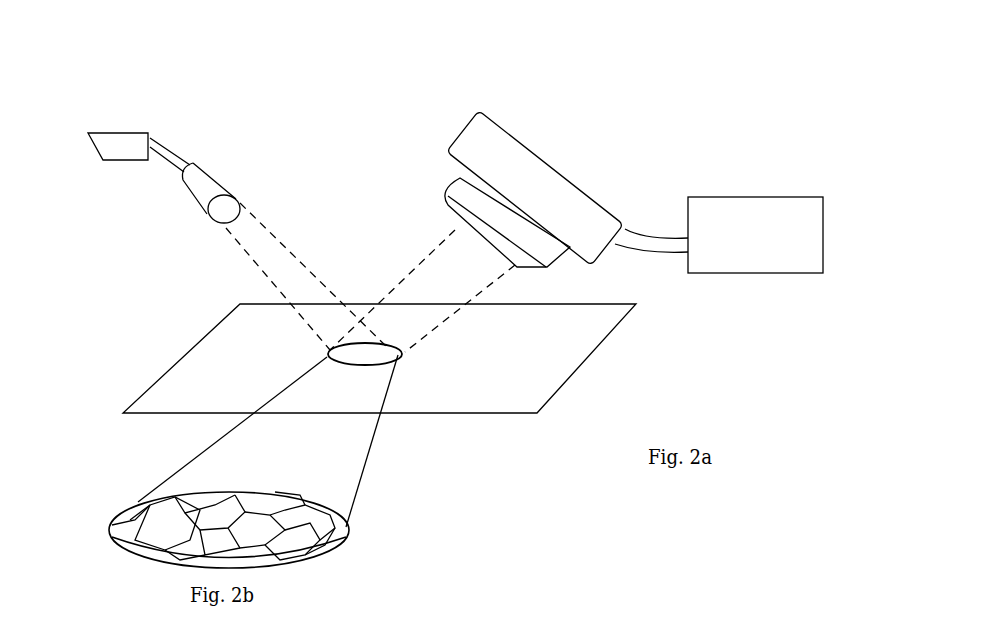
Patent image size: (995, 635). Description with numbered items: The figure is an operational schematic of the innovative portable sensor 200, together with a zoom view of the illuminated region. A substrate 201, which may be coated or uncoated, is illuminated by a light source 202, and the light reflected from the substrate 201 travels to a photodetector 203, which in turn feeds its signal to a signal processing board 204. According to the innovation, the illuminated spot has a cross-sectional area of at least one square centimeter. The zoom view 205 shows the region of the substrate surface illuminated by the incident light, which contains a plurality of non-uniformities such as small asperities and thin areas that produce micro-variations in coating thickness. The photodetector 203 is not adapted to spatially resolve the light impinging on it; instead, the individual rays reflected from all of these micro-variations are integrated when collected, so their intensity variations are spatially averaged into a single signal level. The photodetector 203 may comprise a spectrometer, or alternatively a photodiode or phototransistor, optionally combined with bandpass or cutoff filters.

In FIG. 2A, the imaging system 200 is at (634, 81).
In FIG. 2A, the substrate 201 is at (563, 363).
In FIG. 2A, the light source 202 is at (220, 176).
In FIG. 2A, the photodetector 203 is at (447, 201).
In FIG. 2A, the signal processing board 204 is at (768, 202).
In FIG. 2B, the magnified view of illuminated spot 205 is at (112, 516).